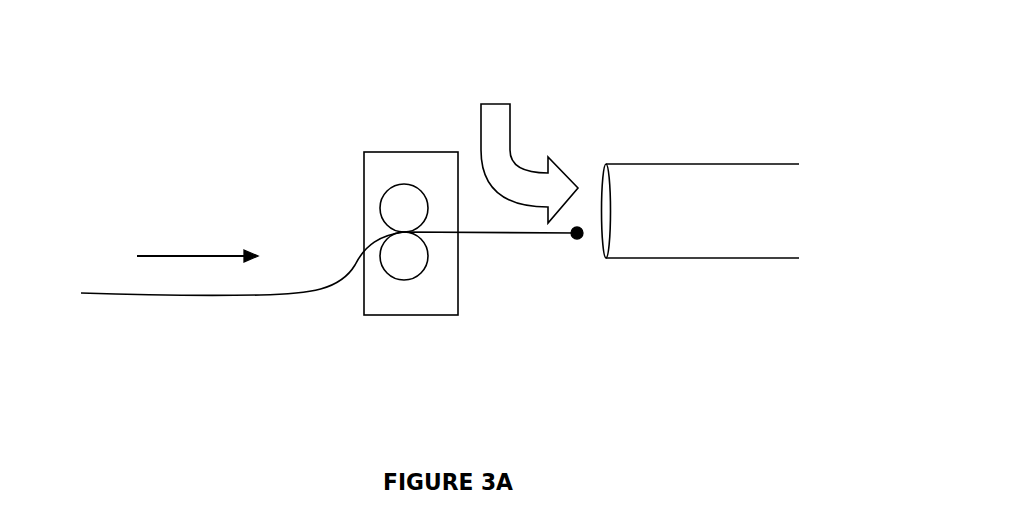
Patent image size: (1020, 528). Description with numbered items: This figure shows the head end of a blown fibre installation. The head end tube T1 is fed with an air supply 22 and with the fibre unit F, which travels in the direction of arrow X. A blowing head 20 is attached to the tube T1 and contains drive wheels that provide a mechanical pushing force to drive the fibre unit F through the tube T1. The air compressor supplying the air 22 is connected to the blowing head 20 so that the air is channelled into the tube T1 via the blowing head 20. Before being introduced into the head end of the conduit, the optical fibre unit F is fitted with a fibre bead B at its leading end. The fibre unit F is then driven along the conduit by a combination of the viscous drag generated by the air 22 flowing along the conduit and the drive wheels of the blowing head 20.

The direction arrow X is at (197, 248).
The fibre unit F is at (203, 295).
The blowing head 20 is at (403, 315).
The fibre bead B is at (572, 238).
The air supply 22 is at (505, 104).
The head end tube T1 is at (665, 164).